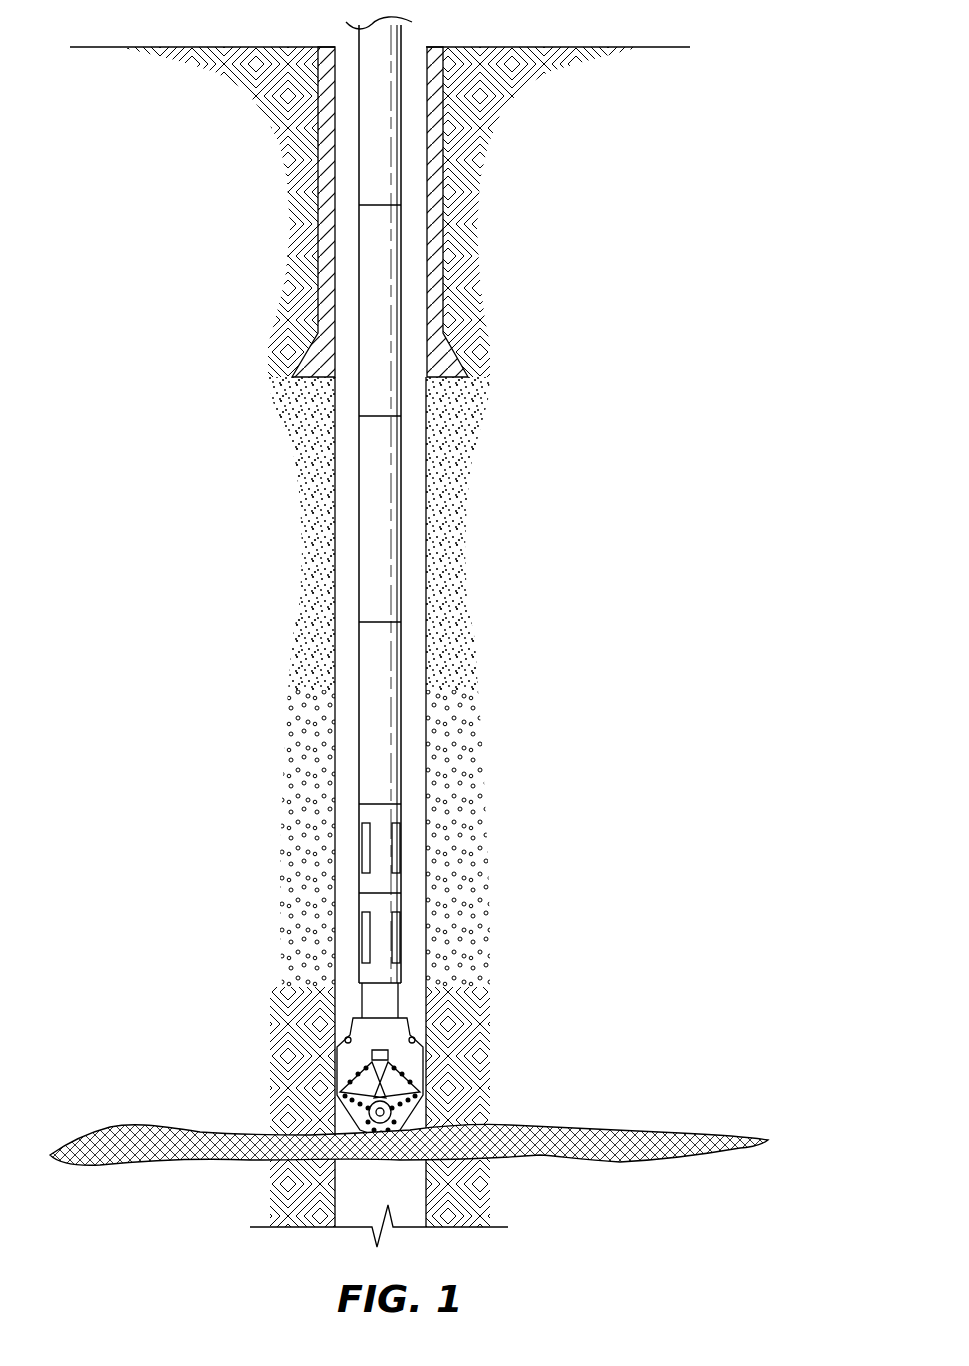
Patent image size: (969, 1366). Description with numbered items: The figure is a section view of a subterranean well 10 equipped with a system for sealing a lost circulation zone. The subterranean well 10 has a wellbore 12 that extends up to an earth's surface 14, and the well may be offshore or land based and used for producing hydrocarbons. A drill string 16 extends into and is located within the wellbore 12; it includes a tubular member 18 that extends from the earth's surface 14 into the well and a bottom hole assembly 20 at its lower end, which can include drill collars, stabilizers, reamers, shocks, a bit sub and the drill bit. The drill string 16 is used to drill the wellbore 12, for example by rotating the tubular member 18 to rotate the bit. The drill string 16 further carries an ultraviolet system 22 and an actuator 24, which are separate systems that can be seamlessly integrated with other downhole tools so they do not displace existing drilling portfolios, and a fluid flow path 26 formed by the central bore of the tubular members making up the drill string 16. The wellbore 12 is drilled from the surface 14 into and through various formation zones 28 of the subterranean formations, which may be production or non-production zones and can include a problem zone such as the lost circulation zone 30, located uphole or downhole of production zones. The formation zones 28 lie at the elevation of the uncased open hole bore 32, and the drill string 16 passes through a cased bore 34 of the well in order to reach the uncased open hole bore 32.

The subterranean well 10 is at (440, 460).
The wellbore 12 is at (415, 497).
The earth's surface 14 is at (547, 47).
The drill string 16 is at (400, 230).
The tubular member 18 is at (358, 487).
The bottom hole assembly 20 is at (345, 1030).
The ultraviolet system 22 is at (362, 942).
The actuator 24 is at (362, 850).
The fluid flow path 26 is at (383, 697).
The formation zones 28 is at (556, 1228).
The lost circulation zone 30 is at (640, 1135).
The uncased open hole bore 32 is at (417, 752).
The cased bore 34 is at (345, 242).